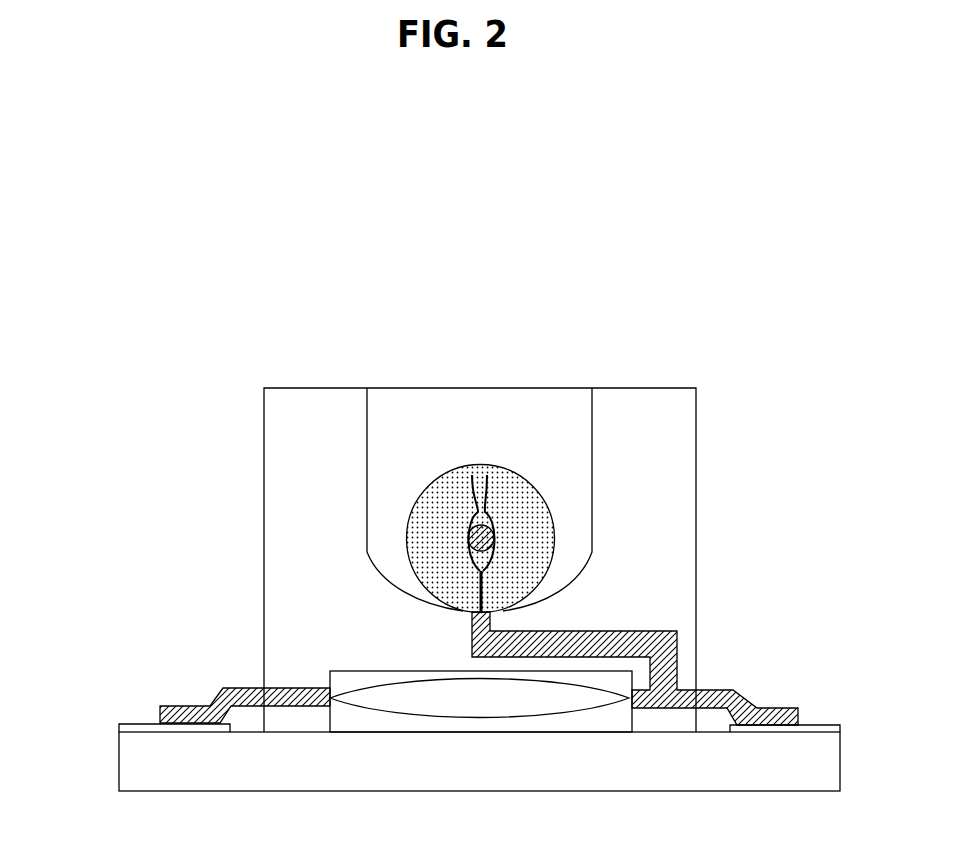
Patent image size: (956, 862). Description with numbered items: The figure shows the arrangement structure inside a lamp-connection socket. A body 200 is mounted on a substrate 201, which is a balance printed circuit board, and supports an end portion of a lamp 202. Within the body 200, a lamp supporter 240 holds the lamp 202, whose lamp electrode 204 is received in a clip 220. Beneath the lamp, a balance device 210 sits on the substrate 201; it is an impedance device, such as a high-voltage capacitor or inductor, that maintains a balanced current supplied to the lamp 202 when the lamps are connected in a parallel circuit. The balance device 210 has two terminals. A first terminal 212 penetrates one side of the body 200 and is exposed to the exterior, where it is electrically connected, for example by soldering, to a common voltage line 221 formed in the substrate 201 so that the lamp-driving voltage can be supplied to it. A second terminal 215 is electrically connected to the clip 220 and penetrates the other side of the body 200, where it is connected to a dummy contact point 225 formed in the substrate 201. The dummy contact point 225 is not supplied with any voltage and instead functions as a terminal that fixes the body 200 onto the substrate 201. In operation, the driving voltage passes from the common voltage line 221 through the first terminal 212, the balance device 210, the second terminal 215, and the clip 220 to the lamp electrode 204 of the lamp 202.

The body 200 is at (645, 403).
The substrate 201 is at (273, 776).
The lamp 202 is at (448, 468).
The lamp electrode 204 is at (493, 532).
The balance device 210 is at (467, 710).
The first terminal 212 is at (180, 712).
The second terminal 215 is at (723, 690).
The clip 220 is at (490, 468).
The common voltage line 221 is at (128, 727).
The dummy contact point 225 is at (828, 727).
The lamp supporter 240 is at (367, 530).